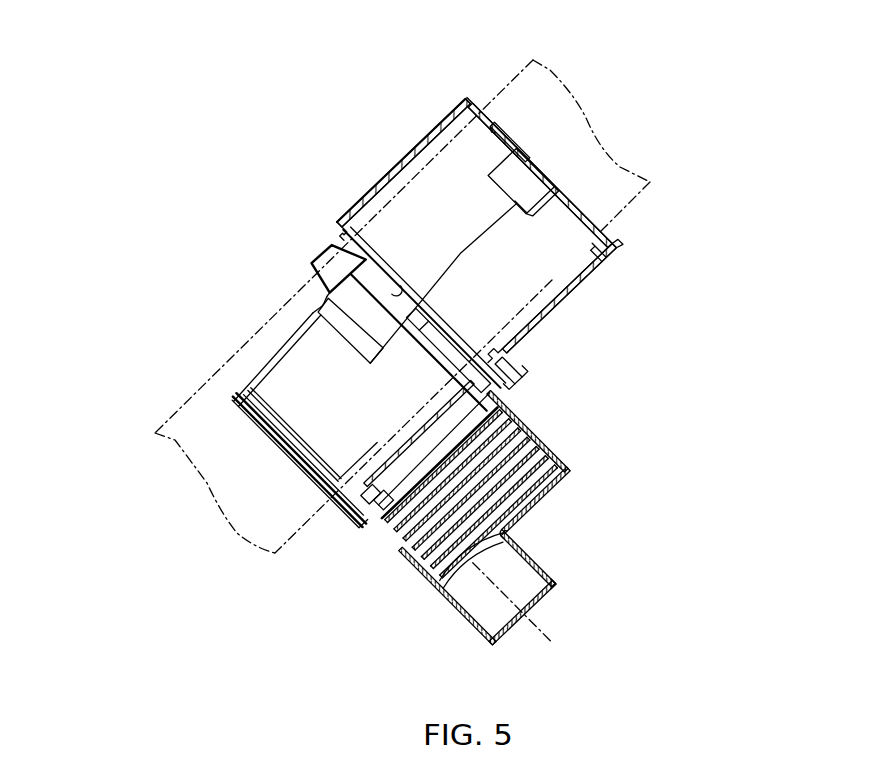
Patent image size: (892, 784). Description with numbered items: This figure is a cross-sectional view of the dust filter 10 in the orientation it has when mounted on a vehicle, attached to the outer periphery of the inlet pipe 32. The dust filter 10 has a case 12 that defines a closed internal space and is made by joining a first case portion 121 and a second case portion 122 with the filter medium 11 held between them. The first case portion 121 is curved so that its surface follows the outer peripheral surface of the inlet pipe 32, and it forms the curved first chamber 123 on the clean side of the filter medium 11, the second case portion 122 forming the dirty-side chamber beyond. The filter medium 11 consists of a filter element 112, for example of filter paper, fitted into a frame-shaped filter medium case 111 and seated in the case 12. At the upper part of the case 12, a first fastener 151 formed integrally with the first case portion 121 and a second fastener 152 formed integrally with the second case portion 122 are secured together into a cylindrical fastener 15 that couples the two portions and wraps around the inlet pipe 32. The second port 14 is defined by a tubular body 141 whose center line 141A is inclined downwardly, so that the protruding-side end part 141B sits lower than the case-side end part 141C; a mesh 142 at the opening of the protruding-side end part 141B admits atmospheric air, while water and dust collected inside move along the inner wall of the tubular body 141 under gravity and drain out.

The dust filter 10 is at (645, 235).
The filter medium 11 is at (519, 514).
The filter medium case 111 is at (520, 450).
The filter element 112 is at (522, 474).
The case 12 is at (443, 384).
The first case portion 121 is at (260, 370).
The second case portion 122 is at (555, 452).
The first chamber 123 is at (418, 452).
The second port 14 is at (533, 598).
The tubular body 141 is at (530, 560).
The center line 141A is at (545, 637).
The protruding-side end part 141B is at (553, 587).
The case-side end part 141C is at (510, 532).
The mesh 142 is at (540, 600).
The fastener 15 is at (515, 221).
The first fastener 151 is at (567, 307).
The second fastener 152 is at (407, 152).
The inlet pipe 32 is at (502, 90).